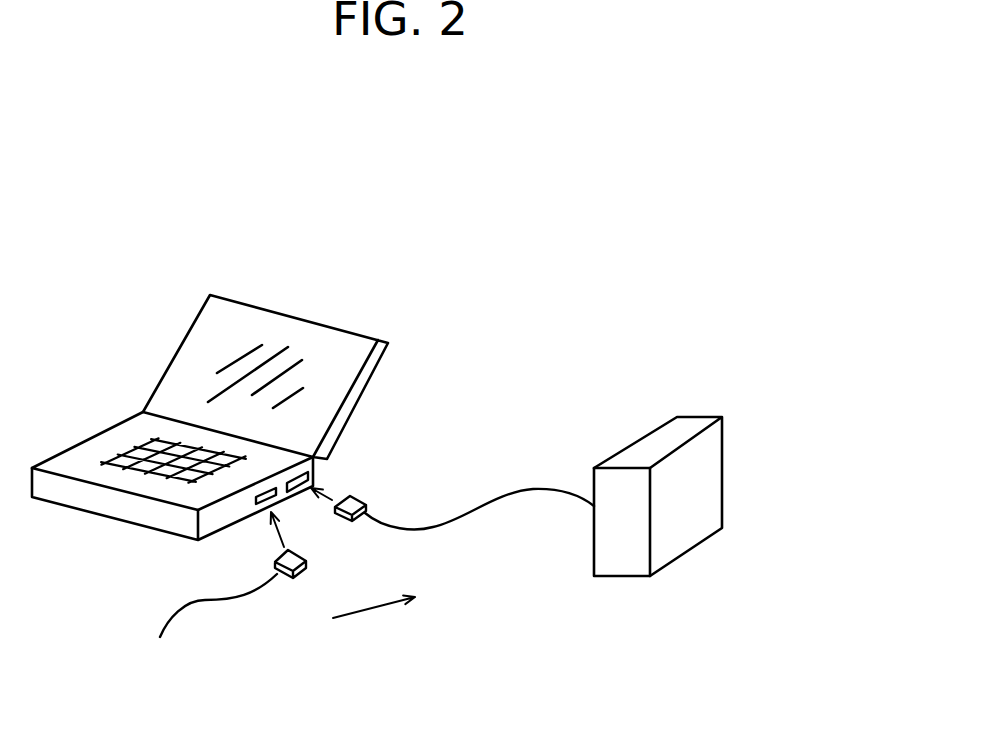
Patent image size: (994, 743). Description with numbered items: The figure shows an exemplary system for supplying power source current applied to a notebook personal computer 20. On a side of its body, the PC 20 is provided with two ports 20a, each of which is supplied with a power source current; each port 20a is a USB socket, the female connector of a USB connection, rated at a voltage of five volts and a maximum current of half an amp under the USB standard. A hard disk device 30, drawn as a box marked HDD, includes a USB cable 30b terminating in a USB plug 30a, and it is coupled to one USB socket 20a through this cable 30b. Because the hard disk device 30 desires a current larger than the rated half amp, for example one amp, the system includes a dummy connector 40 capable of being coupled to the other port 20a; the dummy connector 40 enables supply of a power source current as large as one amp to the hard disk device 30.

The notebook personal computer 20 is at (378, 340).
The port 20a is at (327, 459).
The hard disk device 30 is at (640, 436).
The USB plug 30a is at (365, 498).
The USB cable 30b is at (485, 510).
The dummy connector 40 is at (276, 593).